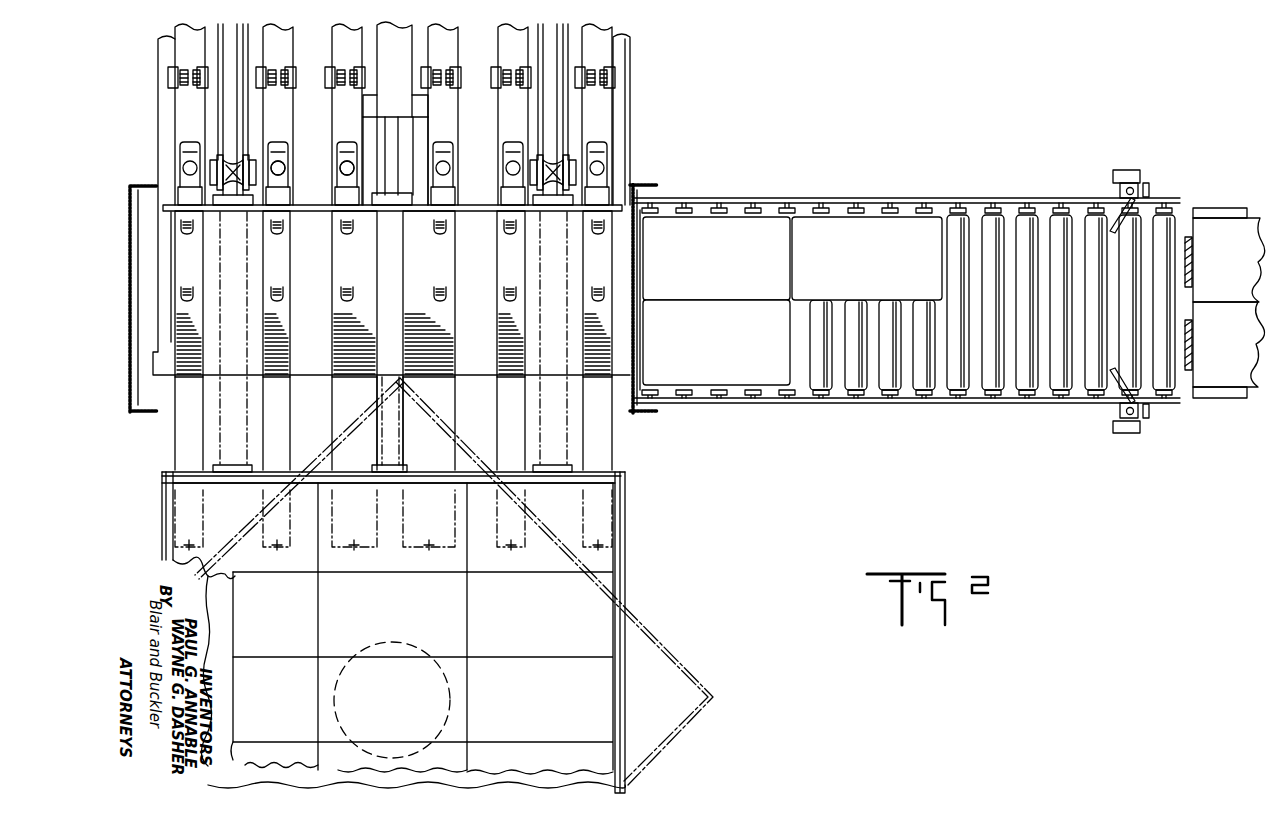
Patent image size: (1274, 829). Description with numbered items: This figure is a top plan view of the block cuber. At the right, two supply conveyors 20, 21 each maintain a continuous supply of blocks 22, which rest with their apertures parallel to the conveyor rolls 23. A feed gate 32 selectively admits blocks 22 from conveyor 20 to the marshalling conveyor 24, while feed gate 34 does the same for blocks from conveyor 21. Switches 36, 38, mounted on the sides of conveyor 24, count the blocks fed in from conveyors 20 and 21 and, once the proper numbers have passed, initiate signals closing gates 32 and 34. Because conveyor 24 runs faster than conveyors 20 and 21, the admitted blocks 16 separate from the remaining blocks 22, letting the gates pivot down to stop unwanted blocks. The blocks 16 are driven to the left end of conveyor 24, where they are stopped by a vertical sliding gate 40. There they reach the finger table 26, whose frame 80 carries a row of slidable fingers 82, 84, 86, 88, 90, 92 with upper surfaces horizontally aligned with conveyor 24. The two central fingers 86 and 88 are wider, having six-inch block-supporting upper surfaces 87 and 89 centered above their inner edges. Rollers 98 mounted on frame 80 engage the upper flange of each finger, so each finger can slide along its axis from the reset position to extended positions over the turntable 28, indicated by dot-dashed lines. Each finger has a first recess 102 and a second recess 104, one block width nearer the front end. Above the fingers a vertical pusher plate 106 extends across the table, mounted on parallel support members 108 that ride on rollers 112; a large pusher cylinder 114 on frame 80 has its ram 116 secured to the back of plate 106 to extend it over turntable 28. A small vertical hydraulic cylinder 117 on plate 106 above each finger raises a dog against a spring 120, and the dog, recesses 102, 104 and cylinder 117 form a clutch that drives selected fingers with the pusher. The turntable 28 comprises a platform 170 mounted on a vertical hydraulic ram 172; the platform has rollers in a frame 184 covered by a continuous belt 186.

The blocks 16 is at (826, 230).
The conveyor 20 is at (1202, 206).
The conveyor 21 is at (1206, 402).
The blocks 22 is at (1252, 214).
The conveyor rolls 23 is at (1056, 224).
The marshalling conveyor 24 is at (972, 172).
The finger table 26 is at (152, 85).
The turntable 28 is at (677, 603).
The feed gate 32 is at (1192, 256).
The feed gate 34 is at (1192, 342).
The switch 36 is at (1130, 174).
The switch 38 is at (1120, 438).
The vertical sliding gate 40 is at (642, 280).
The frame 80 is at (629, 106).
The finger 82 is at (600, 368).
The finger 84 is at (514, 368).
The finger 86 is at (442, 362).
The block-supporting upper surface 87 is at (436, 318).
The finger 88 is at (358, 366).
The block-supporting upper surface 89 is at (356, 318).
The finger 90 is at (276, 370).
The finger 92 is at (185, 380).
The rollers 98 is at (198, 87).
The first recess 102 is at (344, 230).
The second recess 104 is at (344, 297).
The pusher plate 106 is at (165, 208).
The support members 108 is at (228, 52).
The rollers 112 is at (238, 196).
The pusher cylinder 114 is at (416, 56).
The ram 116 is at (402, 152).
The vertical hydraulic cylinder 117 is at (182, 192).
The spring 120 is at (346, 166).
The platform 170 is at (624, 496).
The vertical hydraulic ram 172 is at (400, 642).
The frame 184 is at (162, 522).
The continuous belt 186 is at (212, 588).